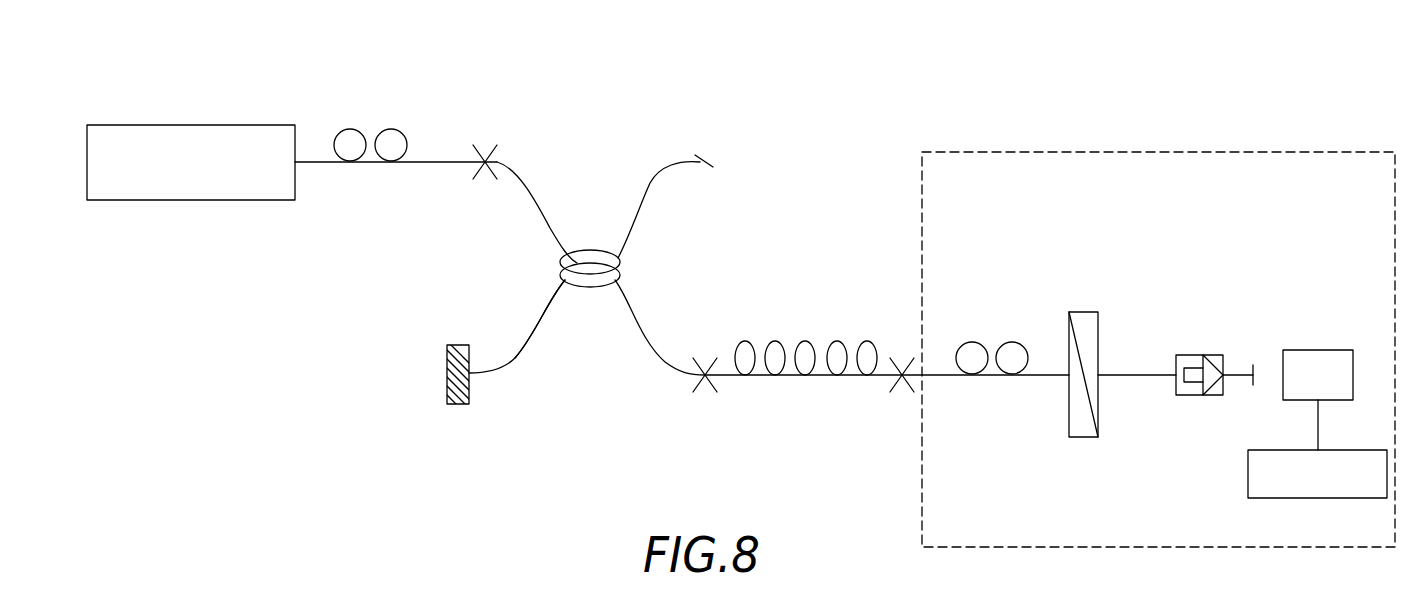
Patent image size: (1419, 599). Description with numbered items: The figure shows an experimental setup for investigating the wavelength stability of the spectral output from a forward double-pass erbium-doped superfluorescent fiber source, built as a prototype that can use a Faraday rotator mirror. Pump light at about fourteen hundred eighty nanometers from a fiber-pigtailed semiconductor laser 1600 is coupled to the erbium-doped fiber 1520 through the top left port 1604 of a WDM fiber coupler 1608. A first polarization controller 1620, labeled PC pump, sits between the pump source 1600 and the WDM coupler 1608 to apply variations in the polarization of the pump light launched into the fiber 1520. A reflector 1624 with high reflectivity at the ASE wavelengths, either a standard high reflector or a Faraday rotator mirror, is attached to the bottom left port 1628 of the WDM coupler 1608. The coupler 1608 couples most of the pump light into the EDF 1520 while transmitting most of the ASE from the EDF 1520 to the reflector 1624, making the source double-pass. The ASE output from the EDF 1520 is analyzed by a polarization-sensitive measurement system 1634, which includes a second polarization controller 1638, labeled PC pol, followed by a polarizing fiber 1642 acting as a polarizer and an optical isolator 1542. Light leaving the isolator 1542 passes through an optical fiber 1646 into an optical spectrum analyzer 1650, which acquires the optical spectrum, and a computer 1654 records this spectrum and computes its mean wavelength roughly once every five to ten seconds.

The fiber-pigtailed semiconductor laser 1600 is at (190, 124).
The first polarization controller 1620 is at (357, 128).
The top left port 1604 is at (520, 178).
The WDM fiber coupler 1608 is at (592, 248).
The reflector 1624 is at (447, 374).
The bottom left port 1628 is at (525, 353).
The erbium-doped fiber 1520 is at (775, 340).
The polarization-sensitive measurement system 1634 is at (1083, 152).
The second polarization controller 1638 is at (1023, 348).
The polarizing fiber 1642 is at (1083, 312).
The optical isolator 1542 is at (1203, 355).
The optical fiber 1646 is at (1240, 378).
The optical spectrum analyzer 1650 is at (1328, 350).
The computer 1654 is at (1248, 470).